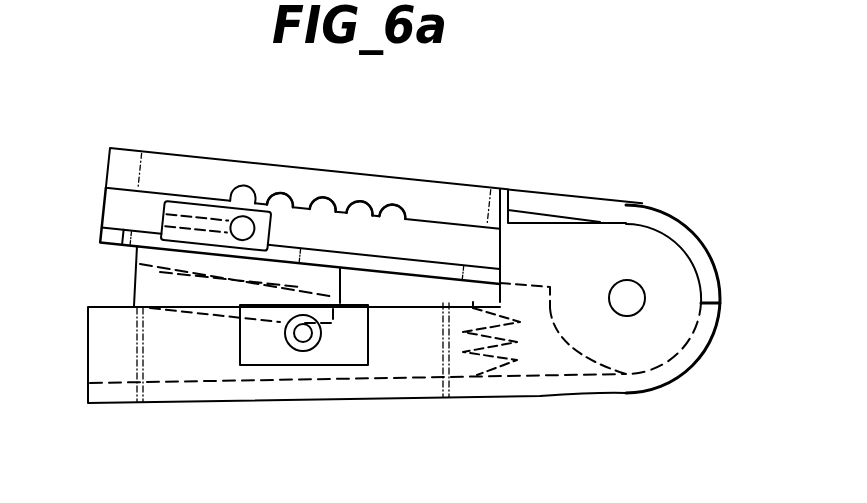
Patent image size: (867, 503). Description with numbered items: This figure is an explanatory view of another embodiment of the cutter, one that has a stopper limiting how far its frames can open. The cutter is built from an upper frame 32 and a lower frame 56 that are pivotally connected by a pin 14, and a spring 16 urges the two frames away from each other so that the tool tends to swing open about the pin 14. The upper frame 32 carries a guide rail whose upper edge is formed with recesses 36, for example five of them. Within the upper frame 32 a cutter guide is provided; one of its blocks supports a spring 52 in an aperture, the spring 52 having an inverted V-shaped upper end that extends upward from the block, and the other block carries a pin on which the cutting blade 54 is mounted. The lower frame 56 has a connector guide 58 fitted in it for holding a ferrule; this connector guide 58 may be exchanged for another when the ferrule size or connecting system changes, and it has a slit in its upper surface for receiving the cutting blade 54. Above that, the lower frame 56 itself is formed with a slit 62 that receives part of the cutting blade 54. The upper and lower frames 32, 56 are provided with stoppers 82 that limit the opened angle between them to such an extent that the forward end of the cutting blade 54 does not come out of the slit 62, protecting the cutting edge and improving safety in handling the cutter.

The pin 14 is at (627, 293).
The spring 16 is at (517, 342).
The upper frame 32 is at (287, 173).
The recesses 36 is at (340, 202).
The spring 52 is at (240, 188).
The cutting blade 54 is at (137, 272).
The lower frame 56 is at (207, 365).
The connector guide 58 is at (352, 357).
The slit 62 is at (117, 383).
The stoppers 82 is at (722, 303).